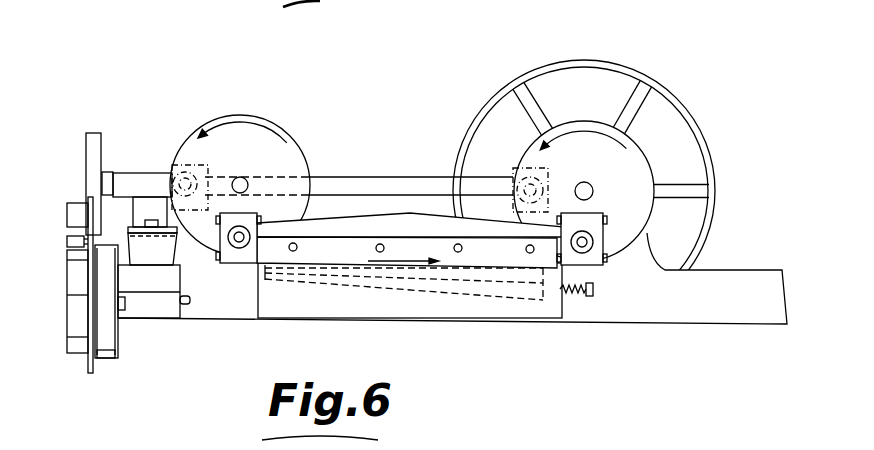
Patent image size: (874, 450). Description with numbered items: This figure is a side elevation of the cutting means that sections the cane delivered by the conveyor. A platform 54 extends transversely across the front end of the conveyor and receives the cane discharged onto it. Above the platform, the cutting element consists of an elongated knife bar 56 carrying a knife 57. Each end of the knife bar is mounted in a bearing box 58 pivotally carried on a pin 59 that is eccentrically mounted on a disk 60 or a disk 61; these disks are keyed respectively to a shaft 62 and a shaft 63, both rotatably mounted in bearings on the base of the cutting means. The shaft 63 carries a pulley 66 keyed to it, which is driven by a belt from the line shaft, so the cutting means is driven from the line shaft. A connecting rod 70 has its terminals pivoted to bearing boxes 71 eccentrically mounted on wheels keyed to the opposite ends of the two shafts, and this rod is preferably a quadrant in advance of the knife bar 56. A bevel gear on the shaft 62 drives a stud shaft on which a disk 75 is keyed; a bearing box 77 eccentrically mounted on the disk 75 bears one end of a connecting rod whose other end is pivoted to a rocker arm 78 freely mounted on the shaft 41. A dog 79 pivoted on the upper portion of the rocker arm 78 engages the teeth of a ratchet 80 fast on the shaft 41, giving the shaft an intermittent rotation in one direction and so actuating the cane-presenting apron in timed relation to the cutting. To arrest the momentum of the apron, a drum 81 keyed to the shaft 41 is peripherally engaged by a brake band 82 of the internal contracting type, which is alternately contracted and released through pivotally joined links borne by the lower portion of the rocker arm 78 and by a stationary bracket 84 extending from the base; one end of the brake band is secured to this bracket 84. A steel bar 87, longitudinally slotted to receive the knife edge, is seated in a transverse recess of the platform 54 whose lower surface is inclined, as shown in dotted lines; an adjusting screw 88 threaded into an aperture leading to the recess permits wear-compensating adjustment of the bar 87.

The shaft 41 is at (183, 297).
The platform 54 is at (387, 313).
The knife bar 56 is at (357, 218).
The knife 57 is at (318, 250).
The bearing boxes 58 is at (232, 255).
The pins 59 is at (239, 248).
The disk 60 is at (268, 128).
The disk 61 is at (636, 170).
The shaft 62 is at (247, 180).
The shaft 63 is at (590, 186).
The pulley 66 is at (618, 62).
The connecting rod 70 is at (392, 177).
The bearing boxes 71 is at (182, 167).
The disk 75 is at (90, 138).
The bearing box 77 is at (80, 203).
The rocker arm 78 is at (88, 368).
The dog 79 is at (67, 243).
The ratchet 80 is at (75, 311).
The drum 81 is at (118, 347).
The brake band 82 is at (103, 356).
The bracket 84 is at (153, 308).
The bar 87 is at (493, 298).
The adjusting screw 88 is at (592, 297).